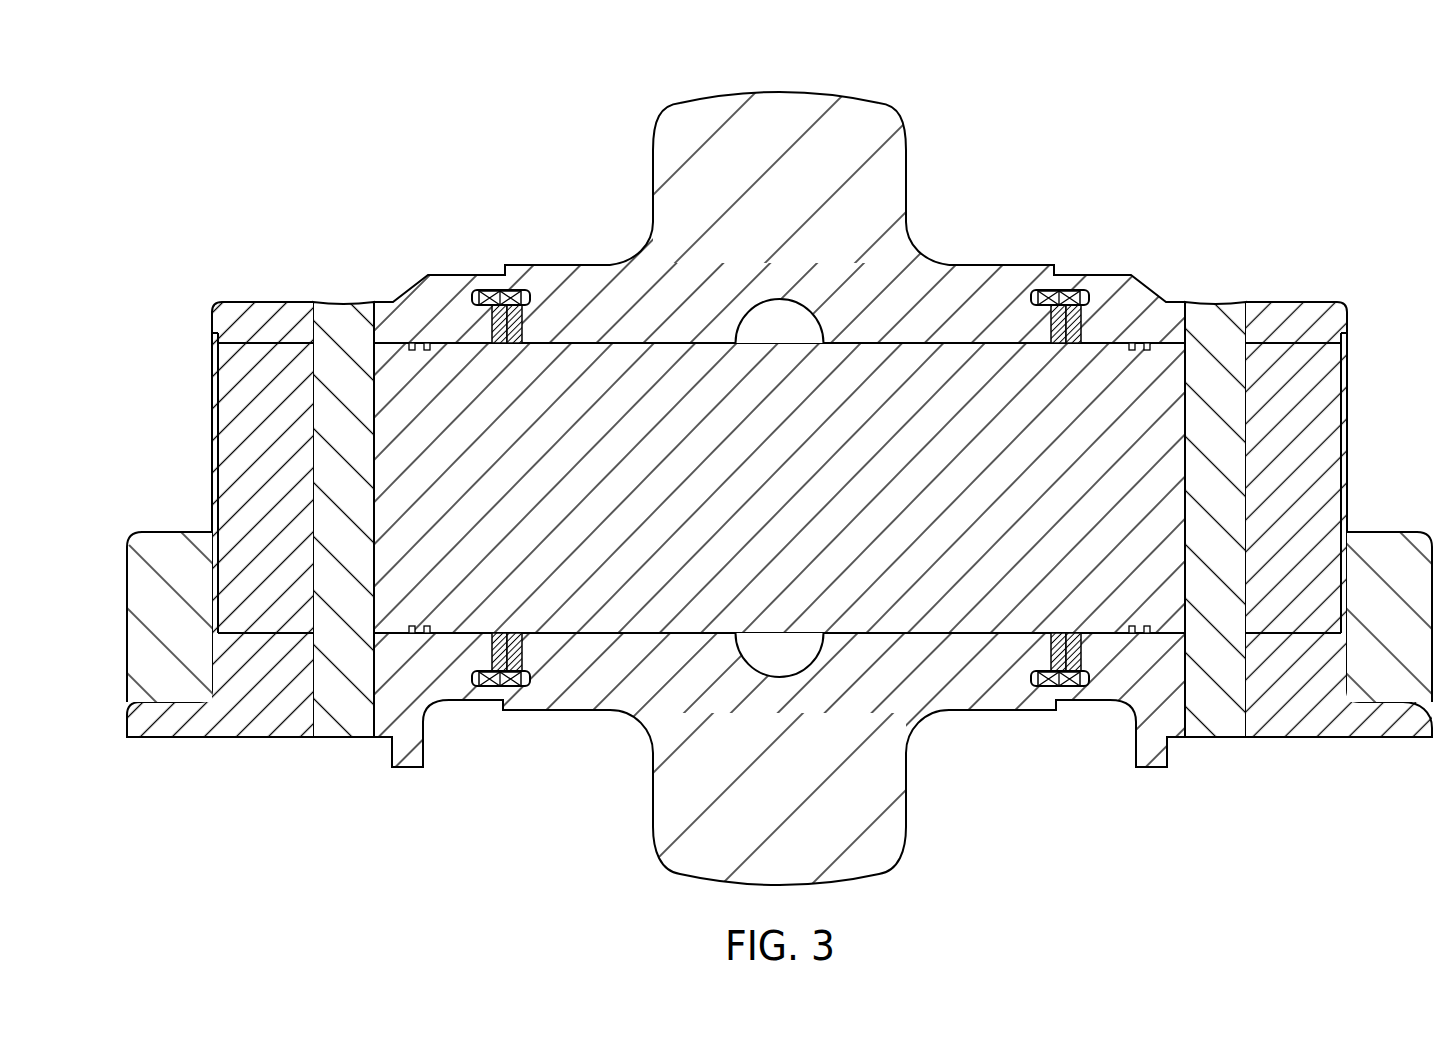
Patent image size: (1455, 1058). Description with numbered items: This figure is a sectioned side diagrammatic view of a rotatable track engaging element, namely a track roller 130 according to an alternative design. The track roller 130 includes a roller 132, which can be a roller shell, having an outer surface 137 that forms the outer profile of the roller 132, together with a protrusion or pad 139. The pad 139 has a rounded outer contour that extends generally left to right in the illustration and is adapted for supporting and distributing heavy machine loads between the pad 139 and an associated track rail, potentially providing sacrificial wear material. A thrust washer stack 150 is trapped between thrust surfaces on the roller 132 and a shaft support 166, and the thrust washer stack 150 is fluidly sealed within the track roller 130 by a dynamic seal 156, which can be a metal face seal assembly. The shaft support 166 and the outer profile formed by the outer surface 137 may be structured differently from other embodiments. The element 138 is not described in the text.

The track roller 130 is at (766, 464).
The roller 132 is at (779, 464).
The outer surface 137 is at (785, 154).
The spacer 138 is at (1325, 396).
The pad 139 is at (779, 106).
The thrust washer stack 150 is at (518, 350).
The dynamic seal 156 is at (546, 290).
The shaft support 166 is at (127, 723).